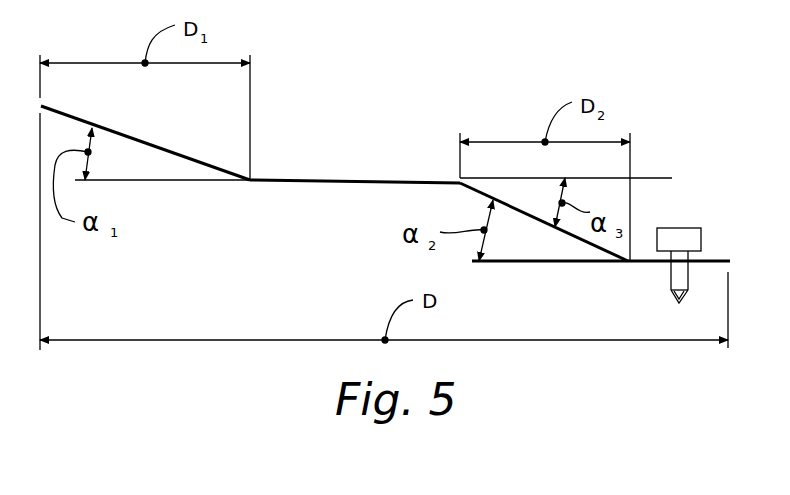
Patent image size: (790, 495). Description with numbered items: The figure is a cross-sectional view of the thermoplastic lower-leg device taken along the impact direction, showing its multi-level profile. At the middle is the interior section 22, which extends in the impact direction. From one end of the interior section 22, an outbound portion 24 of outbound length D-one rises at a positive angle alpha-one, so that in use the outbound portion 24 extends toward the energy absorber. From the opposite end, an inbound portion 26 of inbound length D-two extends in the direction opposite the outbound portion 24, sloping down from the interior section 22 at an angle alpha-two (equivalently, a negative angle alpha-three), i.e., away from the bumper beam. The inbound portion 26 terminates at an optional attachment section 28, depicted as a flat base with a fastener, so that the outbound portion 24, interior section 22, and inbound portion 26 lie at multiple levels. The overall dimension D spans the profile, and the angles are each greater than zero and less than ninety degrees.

The interior section 22 is at (342, 178).
The outbound portion 24 is at (145, 142).
The inbound portion 26 is at (582, 241).
The attachment section 28 is at (715, 260).